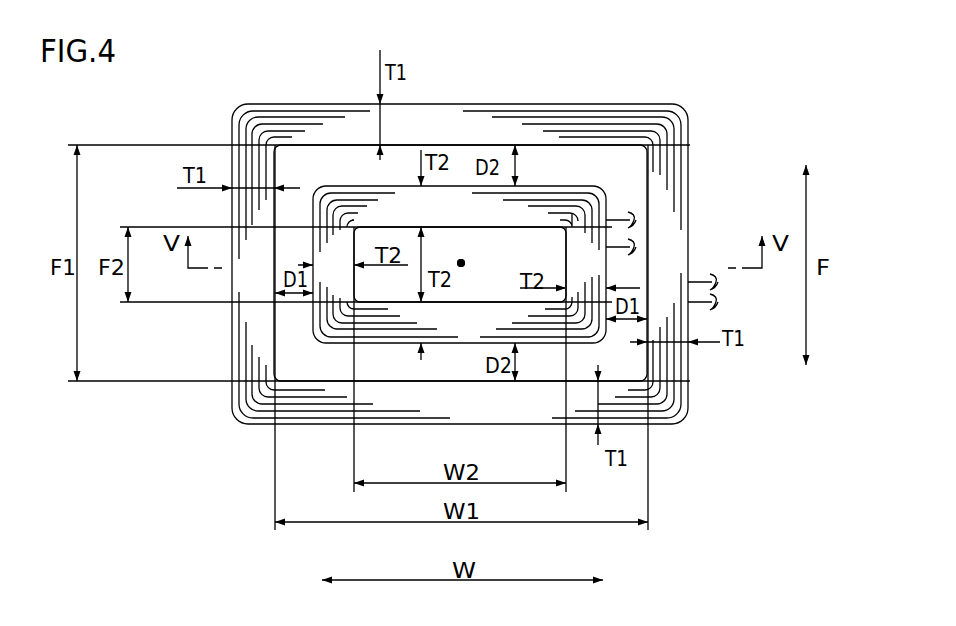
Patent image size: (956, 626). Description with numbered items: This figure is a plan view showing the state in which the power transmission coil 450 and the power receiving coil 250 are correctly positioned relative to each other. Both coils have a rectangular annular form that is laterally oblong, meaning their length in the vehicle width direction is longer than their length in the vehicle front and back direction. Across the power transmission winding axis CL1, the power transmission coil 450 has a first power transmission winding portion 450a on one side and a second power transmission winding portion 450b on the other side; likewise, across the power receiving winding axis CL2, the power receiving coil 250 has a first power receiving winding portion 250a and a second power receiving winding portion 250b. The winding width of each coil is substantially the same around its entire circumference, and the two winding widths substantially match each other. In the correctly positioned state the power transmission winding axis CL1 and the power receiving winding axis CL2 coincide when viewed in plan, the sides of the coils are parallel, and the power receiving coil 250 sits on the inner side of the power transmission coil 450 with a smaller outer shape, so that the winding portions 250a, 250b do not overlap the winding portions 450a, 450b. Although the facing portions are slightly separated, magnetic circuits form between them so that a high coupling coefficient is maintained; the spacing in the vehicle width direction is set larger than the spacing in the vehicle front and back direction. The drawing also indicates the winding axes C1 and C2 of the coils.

The power receiving coil 250 is at (500, 202).
The first power receiving winding portion 250a is at (323, 213).
The second power receiving winding portion 250b is at (600, 207).
The power transmission coil 450 is at (461, 242).
The first power transmission winding portion 450a is at (250, 338).
The second power transmission winding portion 450b is at (670, 193).
The power transmission winding axis C1 is at (708, 282).
The power receiving winding axis C2 is at (631, 214).
The power transmission winding axis CL1 is at (461, 259).
The power receiving winding axis CL2 is at (461, 259).